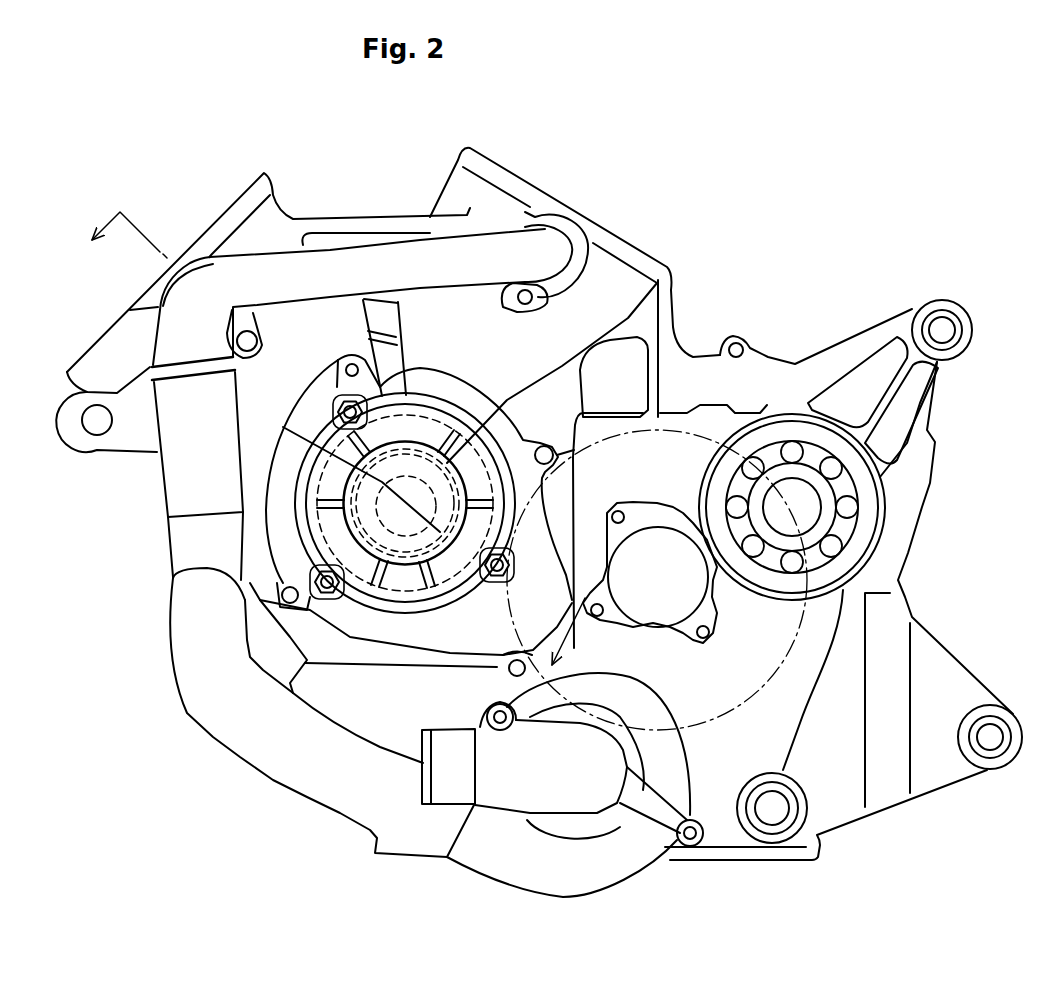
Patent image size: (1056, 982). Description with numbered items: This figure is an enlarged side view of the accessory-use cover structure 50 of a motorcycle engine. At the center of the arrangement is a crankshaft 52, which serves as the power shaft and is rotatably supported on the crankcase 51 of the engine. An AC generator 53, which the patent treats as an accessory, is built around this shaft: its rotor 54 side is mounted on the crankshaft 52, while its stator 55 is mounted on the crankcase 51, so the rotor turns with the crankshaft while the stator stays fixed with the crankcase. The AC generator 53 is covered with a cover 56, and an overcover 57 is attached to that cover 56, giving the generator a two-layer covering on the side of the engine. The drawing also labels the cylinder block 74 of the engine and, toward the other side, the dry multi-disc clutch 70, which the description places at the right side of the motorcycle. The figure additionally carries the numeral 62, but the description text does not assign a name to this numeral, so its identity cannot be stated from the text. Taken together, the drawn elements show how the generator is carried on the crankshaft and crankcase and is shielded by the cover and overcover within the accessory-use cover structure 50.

The accessory-use cover structure 50 is at (250, 140).
The crankcase 51 is at (363, 692).
The crankshaft 52 is at (283, 427).
The AC generator 53 is at (798, 181).
The rotor 54 is at (640, 337).
The stator 55 is at (450, 408).
The cover 56 is at (262, 530).
The overcover 57 is at (285, 471).
The bolt 62 is at (341, 403).
The dry multi-disc clutch 70 is at (805, 507).
The cylinder block 74 is at (543, 166).